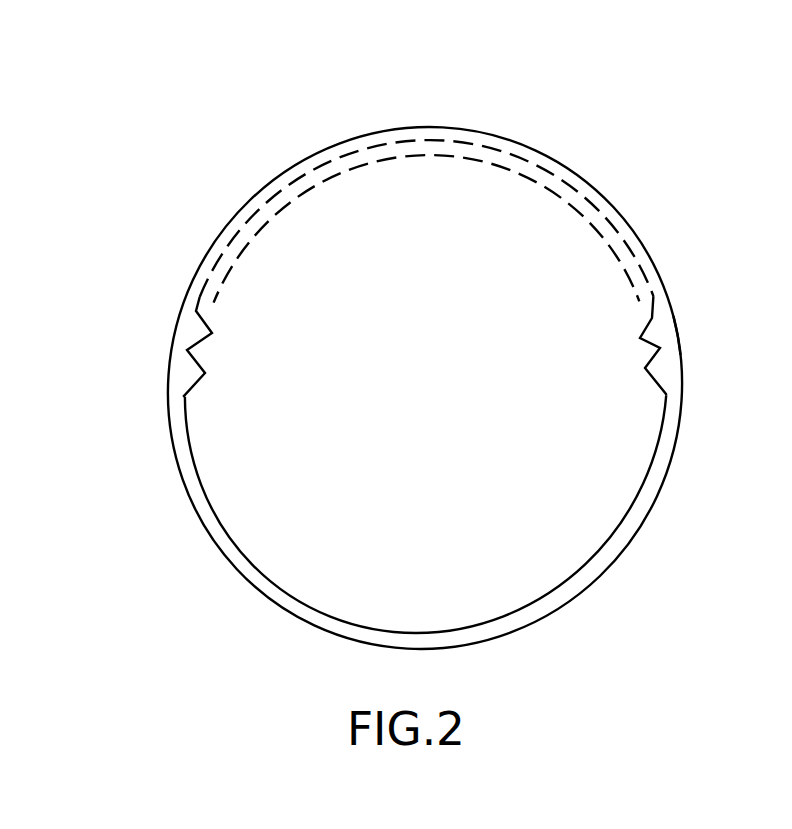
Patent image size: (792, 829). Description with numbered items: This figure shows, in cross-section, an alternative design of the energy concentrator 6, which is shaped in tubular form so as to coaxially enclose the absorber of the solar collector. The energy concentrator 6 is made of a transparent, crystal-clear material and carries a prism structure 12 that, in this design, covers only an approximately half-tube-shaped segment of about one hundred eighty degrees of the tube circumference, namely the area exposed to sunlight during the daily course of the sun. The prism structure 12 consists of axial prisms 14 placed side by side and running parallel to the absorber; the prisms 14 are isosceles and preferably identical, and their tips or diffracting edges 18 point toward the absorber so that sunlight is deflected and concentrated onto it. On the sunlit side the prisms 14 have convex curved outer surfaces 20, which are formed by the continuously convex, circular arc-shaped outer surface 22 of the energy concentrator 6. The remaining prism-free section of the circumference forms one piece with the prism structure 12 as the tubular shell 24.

The energy concentrator 6 is at (424, 388).
The prism structure 12 is at (660, 284).
The prisms 14 is at (640, 340).
The tips or diffracting edges 18 is at (205, 373).
The convex curved outer surfaces 20 is at (681, 347).
The circular arc-shaped outer surface 22 is at (394, 124).
The tubular shell 24 is at (228, 553).